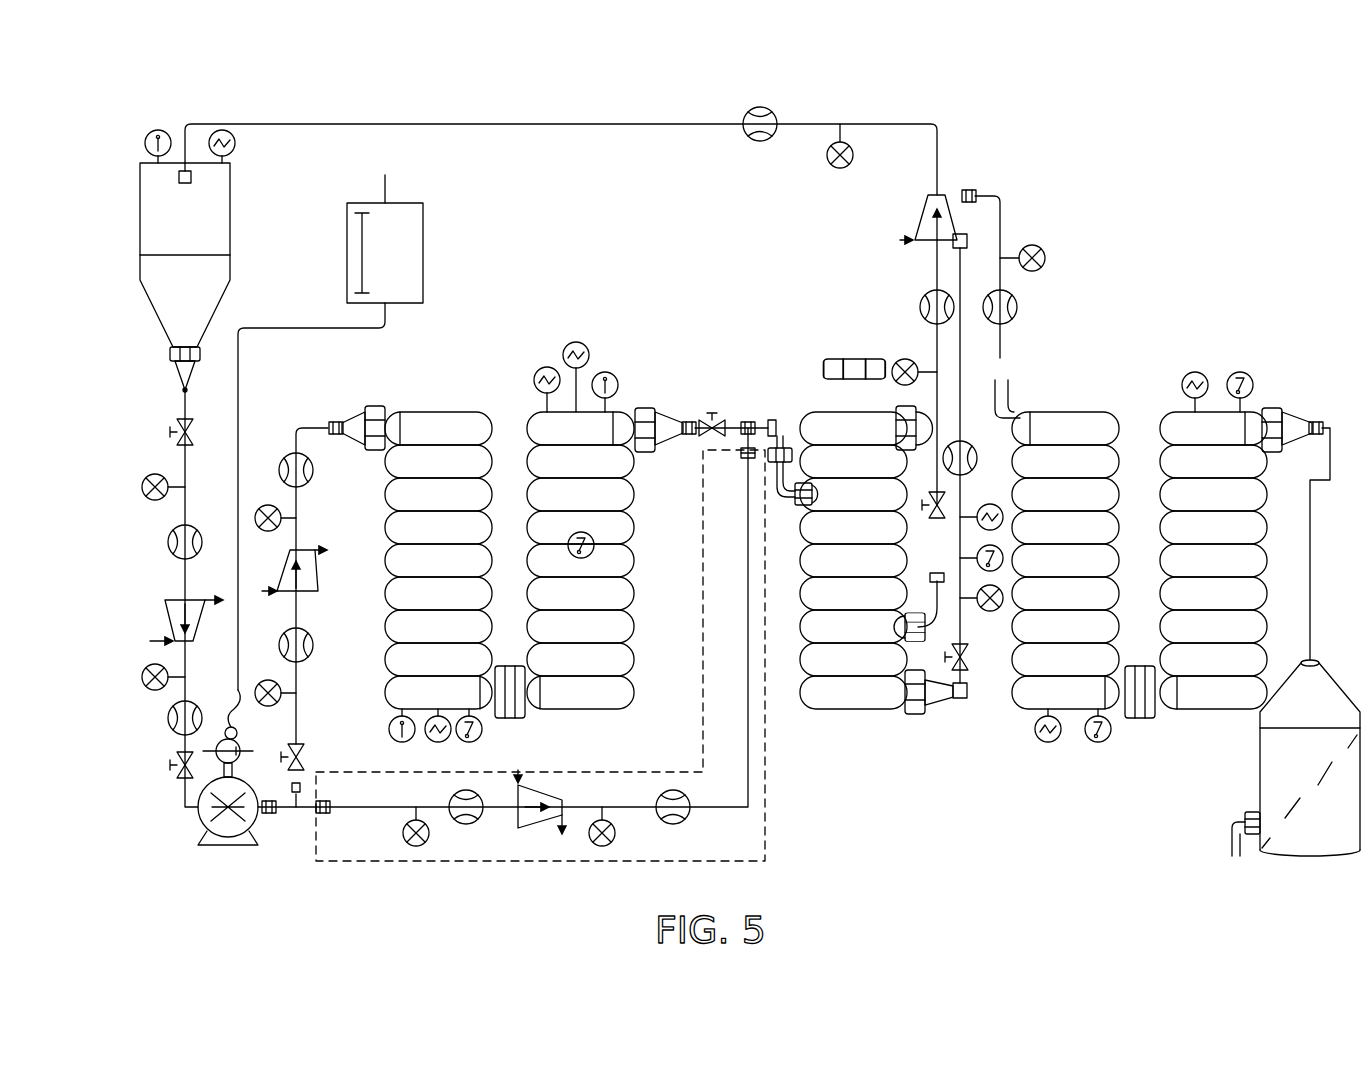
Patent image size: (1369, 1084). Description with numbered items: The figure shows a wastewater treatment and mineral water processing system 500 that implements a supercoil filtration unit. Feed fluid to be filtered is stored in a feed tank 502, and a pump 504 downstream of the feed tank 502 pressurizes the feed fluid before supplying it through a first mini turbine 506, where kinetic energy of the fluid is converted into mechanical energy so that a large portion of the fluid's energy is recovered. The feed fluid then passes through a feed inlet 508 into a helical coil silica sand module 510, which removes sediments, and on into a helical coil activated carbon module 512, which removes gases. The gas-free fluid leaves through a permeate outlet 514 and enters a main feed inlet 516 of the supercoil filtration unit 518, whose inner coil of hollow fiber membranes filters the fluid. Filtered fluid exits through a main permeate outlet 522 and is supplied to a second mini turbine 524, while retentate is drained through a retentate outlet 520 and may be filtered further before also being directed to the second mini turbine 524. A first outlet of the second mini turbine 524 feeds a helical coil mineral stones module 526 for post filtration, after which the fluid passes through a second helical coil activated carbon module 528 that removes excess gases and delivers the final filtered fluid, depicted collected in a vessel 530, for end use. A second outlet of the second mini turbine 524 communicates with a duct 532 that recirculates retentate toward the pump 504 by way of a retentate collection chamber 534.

The wastewater treatment and mineral water processing system 500 is at (1242, 106).
The feed tank 502 is at (423, 254).
The pump 504 is at (198, 815).
The first mini turbine 506 is at (335, 580).
The feed inlet 508 is at (343, 420).
The helical coil silica sand module 510 is at (428, 412).
The helical coil activated carbon module 512 is at (585, 703).
The permeate outlet 514 is at (665, 428).
The main feed inlet 516 is at (784, 484).
The supercoil filtration unit 518 is at (862, 412).
The retentate outlet 520 is at (922, 637).
The main permeate outlet 522 is at (942, 698).
The second mini turbine 524 is at (921, 220).
The helical coil mineral stones module 526 is at (1062, 418).
The helical coil activated carbon module 528 is at (1170, 425).
The collection vessel 530 is at (1260, 766).
The duct 532 is at (543, 124).
The retentate collection chamber 534 is at (140, 222).